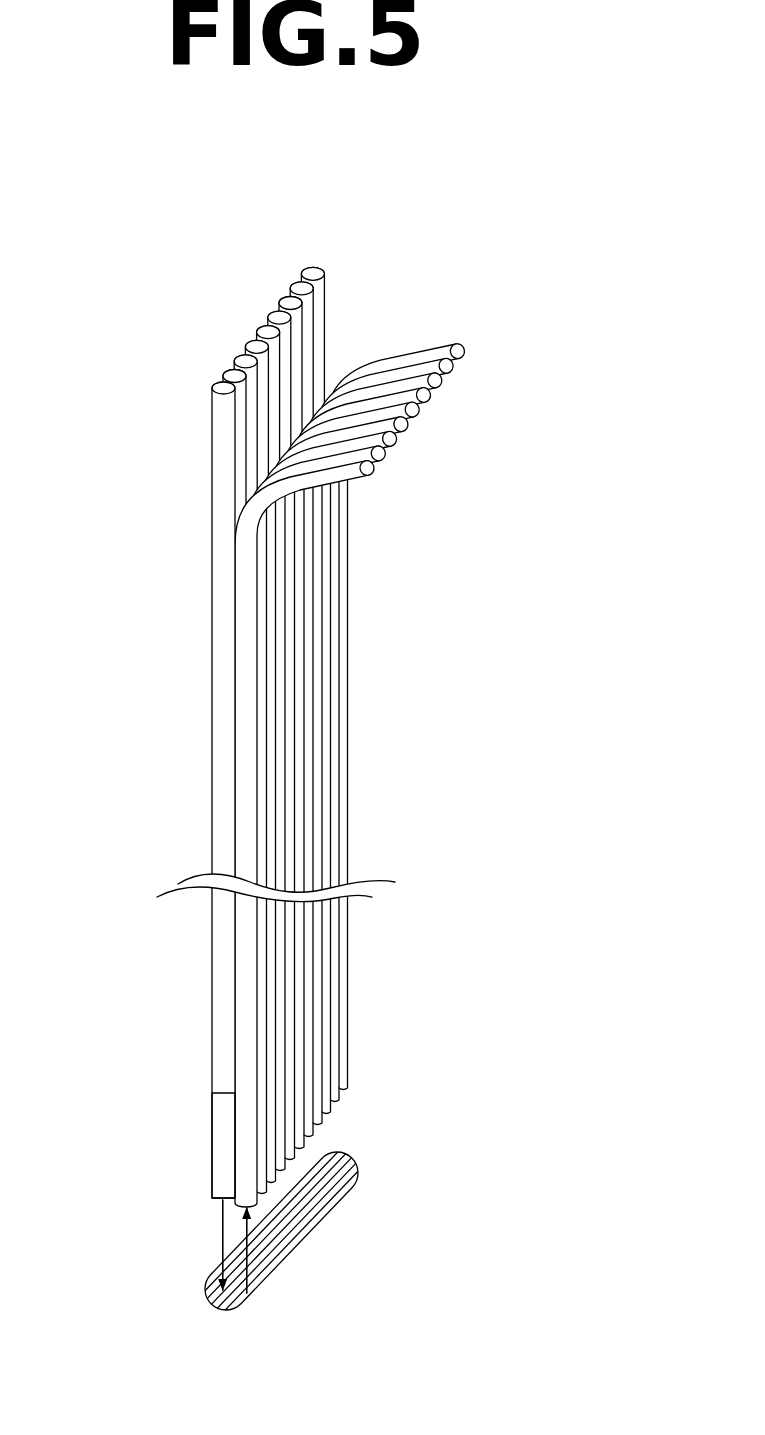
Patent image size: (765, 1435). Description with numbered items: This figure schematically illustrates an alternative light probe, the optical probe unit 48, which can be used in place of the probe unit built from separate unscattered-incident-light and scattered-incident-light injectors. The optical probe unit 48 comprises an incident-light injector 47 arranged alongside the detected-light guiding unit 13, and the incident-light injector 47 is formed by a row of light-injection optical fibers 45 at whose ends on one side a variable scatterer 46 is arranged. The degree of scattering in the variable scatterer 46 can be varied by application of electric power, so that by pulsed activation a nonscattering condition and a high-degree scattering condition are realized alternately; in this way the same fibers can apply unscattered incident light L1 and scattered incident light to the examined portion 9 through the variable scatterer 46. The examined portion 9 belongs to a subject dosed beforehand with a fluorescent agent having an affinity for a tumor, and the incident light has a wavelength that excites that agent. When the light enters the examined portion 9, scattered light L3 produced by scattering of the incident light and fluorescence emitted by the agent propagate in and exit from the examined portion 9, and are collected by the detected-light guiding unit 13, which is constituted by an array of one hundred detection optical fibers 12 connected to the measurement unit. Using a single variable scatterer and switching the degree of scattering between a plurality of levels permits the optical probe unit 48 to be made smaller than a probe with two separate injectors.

The examined portion 9 is at (327, 1207).
The detection optical fibers 12 is at (460, 338).
The detected-light guiding unit 13 is at (386, 721).
The light-injection optical fibers 45 is at (171, 780).
The variable scatterer 46 is at (212, 1125).
The incident-light injector 47 is at (235, 315).
The optical probe unit 48 is at (253, 414).
The unscattered incident light L1 is at (222, 1253).
The scattered light L3 is at (258, 1272).